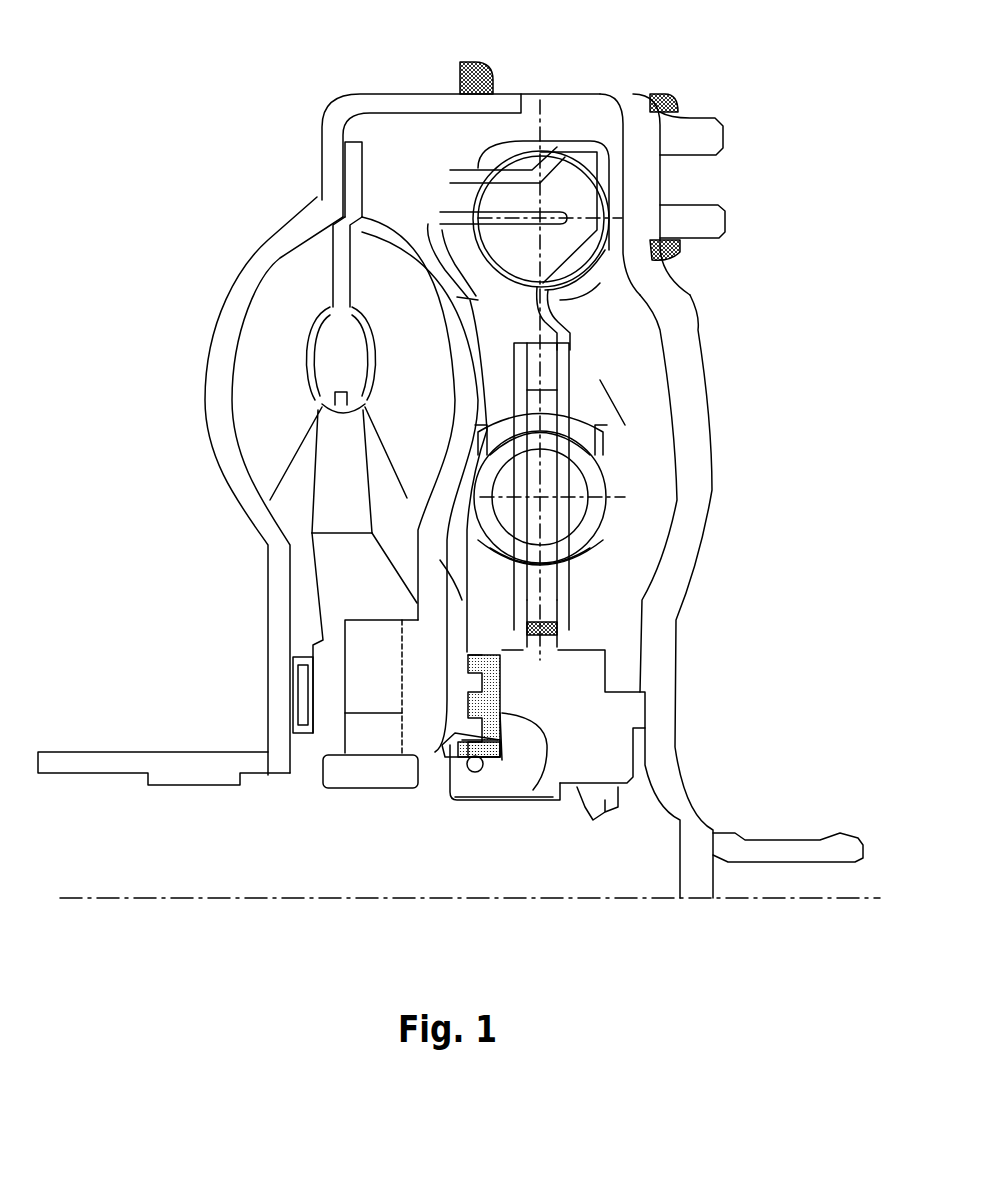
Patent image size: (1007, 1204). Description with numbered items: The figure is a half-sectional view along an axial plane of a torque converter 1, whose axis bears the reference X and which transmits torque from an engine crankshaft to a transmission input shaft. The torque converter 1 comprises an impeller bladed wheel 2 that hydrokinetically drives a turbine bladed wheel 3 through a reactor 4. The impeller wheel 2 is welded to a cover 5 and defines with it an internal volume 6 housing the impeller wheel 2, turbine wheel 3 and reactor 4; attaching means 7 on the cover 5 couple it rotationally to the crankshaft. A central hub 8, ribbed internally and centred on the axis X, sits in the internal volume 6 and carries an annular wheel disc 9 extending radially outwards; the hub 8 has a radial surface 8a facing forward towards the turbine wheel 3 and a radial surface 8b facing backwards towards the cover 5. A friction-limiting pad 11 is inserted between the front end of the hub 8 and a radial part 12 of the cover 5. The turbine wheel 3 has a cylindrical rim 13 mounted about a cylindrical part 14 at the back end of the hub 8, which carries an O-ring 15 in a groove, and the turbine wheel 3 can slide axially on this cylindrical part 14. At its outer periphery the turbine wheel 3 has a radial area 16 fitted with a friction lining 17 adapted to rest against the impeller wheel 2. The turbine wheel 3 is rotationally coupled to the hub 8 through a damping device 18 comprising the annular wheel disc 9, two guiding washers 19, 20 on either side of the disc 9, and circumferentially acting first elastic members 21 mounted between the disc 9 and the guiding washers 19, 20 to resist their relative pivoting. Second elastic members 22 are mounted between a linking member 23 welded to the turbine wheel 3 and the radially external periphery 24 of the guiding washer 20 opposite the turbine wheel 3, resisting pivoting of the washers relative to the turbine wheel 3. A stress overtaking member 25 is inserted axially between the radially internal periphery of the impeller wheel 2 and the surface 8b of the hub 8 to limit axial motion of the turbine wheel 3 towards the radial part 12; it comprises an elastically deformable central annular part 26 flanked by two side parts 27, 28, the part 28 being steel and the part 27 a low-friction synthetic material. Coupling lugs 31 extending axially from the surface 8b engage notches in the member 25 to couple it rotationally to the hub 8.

The torque converter 1 is at (672, 22).
The impeller bladed wheel 2 is at (282, 382).
The turbine bladed wheel 3 is at (380, 286).
The reactor 4 is at (363, 630).
The cover 5 is at (540, 82).
The internal volume 6 is at (601, 106).
The attaching means 7 is at (700, 133).
The central hub 8 is at (583, 690).
The radial surface 8a is at (607, 680).
The radial surface 8b is at (537, 766).
The annular wheel disc 9 is at (565, 608).
The pad 11 is at (628, 717).
The radial part 12 is at (683, 422).
The cylindrical rim 13 is at (462, 752).
The cylindrical part 14 is at (492, 760).
The O-ring 15 is at (475, 773).
The radial area 16 is at (362, 168).
The friction lining 17 is at (338, 168).
The damping device 18 is at (614, 411).
The guiding washer 19 is at (515, 363).
The guiding washer 20 is at (567, 368).
The first elastic members 21 is at (605, 530).
The second elastic members 22 is at (605, 300).
The linking member 23 is at (440, 217).
The radially external periphery 24 is at (605, 176).
The stress overtaking member 25 is at (486, 635).
The central annular part 26 is at (558, 652).
The side part 27 is at (473, 679).
The side part 28 is at (503, 687).
The coupling lugs 31 is at (458, 745).
The axis X is at (758, 900).